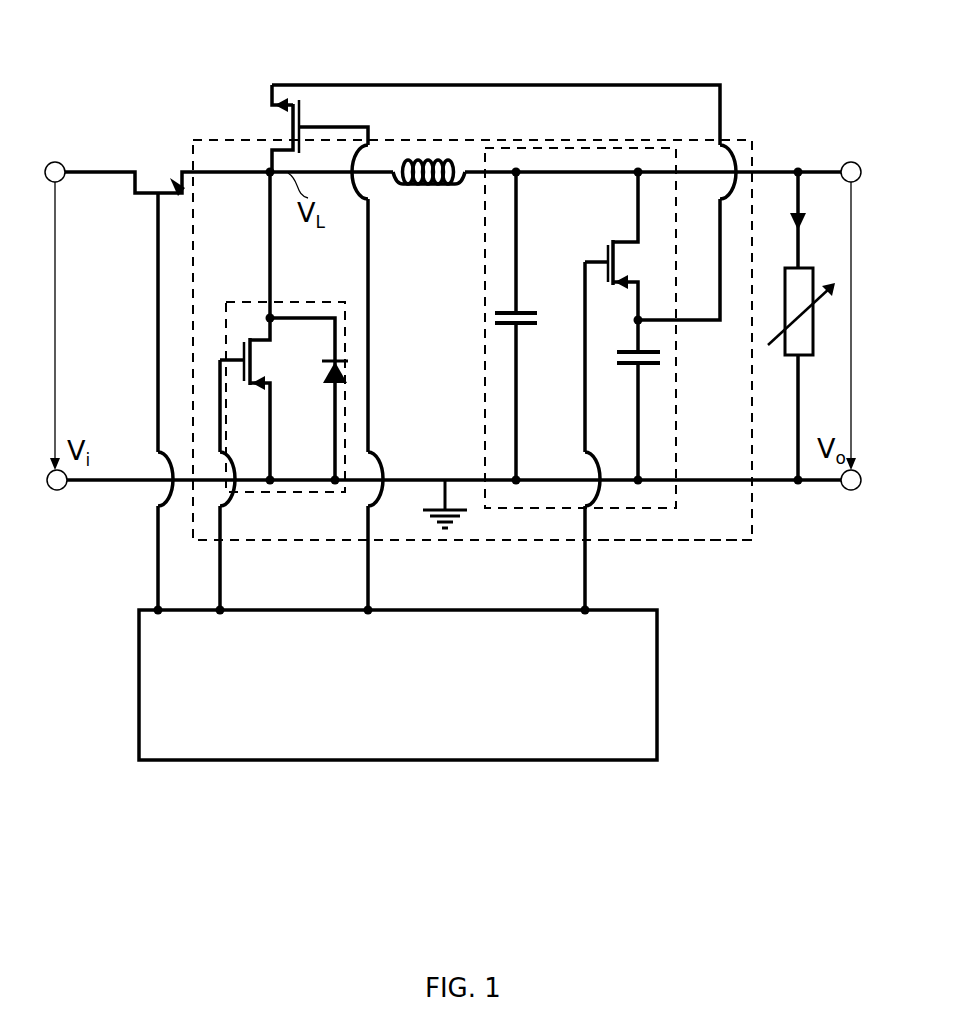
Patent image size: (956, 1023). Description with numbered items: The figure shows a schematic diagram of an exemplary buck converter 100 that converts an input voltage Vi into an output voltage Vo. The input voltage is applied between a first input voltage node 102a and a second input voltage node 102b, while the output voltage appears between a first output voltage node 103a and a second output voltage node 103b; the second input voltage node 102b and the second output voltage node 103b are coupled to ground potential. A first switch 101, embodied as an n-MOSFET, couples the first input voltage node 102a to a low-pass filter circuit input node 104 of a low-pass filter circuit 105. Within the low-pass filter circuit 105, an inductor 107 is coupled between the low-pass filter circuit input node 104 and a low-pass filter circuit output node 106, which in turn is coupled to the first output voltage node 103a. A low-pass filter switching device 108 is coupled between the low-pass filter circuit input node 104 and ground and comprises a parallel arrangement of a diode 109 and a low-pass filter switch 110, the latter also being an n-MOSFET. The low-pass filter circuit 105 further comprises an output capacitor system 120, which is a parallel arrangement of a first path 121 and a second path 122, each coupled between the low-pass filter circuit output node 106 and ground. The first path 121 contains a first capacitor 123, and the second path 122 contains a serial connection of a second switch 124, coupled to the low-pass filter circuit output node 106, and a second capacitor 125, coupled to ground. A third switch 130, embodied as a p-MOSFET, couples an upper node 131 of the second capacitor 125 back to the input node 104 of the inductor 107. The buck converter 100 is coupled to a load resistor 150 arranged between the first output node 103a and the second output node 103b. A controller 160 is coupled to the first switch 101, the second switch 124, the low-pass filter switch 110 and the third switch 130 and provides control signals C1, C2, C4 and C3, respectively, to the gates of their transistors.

The buck converter 100 is at (788, 872).
The first switch 101 is at (158, 177).
The first input voltage node 102a is at (52, 166).
The second input voltage node 102b is at (62, 490).
The first output voltage node 103a is at (847, 163).
The second output voltage node 103b is at (845, 491).
The low-pass filter circuit input node 104 is at (268, 172).
The low-pass filter circuit 105 is at (753, 157).
The low-pass filter circuit output node 106 is at (516, 172).
The inductor 107 is at (432, 160).
The low-pass filter switching device 108 is at (272, 492).
The diode 109 is at (347, 373).
The low-pass filter switch 110 is at (244, 354).
The output capacitor system 120 is at (678, 493).
The first path 121 is at (513, 453).
The second path 122 is at (640, 407).
The first capacitor 123 is at (497, 322).
The second switch 124 is at (610, 260).
The second capacitor 125 is at (648, 358).
The third switch 130 is at (298, 105).
The upper node 131 is at (640, 320).
The load resistor 150 is at (783, 322).
The controller 160 is at (638, 657).